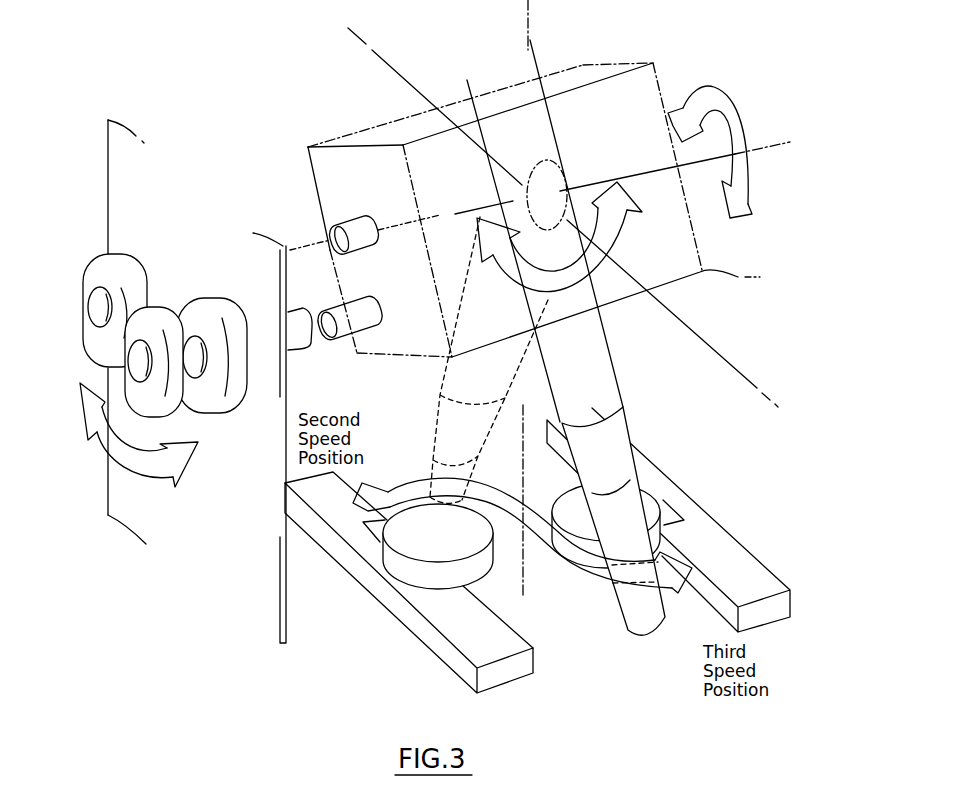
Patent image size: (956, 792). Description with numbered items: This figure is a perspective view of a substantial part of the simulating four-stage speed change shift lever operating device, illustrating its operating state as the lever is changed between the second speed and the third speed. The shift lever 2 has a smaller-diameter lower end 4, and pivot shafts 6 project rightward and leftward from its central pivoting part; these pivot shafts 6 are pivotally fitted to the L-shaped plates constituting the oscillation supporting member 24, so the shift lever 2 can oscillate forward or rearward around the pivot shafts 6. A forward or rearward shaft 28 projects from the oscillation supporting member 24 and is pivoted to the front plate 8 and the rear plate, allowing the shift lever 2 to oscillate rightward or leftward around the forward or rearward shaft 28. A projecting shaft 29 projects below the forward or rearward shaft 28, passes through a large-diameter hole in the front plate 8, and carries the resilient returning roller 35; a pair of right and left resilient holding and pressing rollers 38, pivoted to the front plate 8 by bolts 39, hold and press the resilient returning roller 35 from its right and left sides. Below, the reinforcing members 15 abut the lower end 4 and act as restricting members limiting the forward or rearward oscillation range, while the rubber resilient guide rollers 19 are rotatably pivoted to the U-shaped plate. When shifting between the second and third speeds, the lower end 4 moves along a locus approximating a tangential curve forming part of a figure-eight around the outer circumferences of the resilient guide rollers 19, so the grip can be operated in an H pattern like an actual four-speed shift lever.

The shift lever 2 is at (602, 387).
The lower end of the shift lever 4 is at (646, 633).
The pivot shafts 6 is at (567, 150).
The front plate 8 is at (258, 617).
The reinforcing members 15 is at (452, 636).
The resilient guide rollers 19 is at (413, 550).
The oscillation supporting member 24 is at (772, 278).
The forward or rearward shaft 28 is at (331, 227).
The projecting shaft 29 is at (338, 323).
The resilient returning roller 35 is at (157, 320).
The resilient holding and pressing rollers 38 is at (105, 273).
The bolts 39 is at (95, 292).